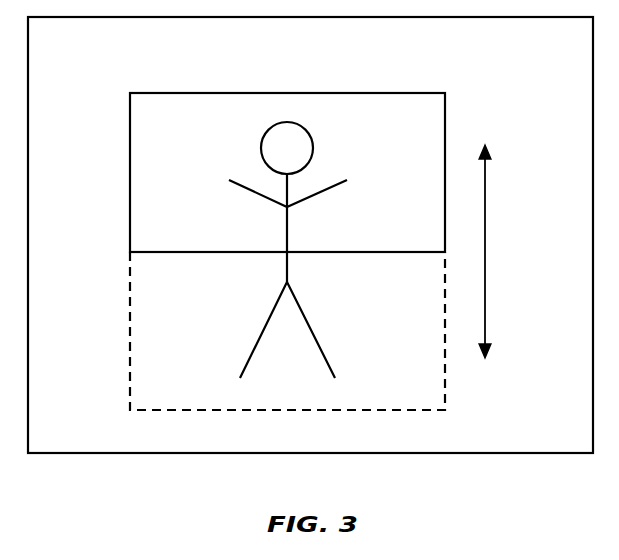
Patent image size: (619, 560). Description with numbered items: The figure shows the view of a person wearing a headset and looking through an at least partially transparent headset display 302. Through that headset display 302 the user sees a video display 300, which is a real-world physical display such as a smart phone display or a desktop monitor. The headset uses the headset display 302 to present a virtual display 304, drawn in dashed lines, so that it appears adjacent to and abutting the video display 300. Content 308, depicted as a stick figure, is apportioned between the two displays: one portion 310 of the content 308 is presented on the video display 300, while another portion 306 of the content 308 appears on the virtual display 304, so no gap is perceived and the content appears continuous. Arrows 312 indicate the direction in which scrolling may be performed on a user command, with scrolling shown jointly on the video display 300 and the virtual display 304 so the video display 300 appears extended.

The video display 300 is at (130, 173).
The headset display 302 is at (92, 58).
The virtual display 304 is at (130, 330).
The portion of content 306 is at (368, 262).
The content 308 is at (262, 150).
The another portion of content 310 is at (368, 123).
The arrows 312 is at (486, 252).